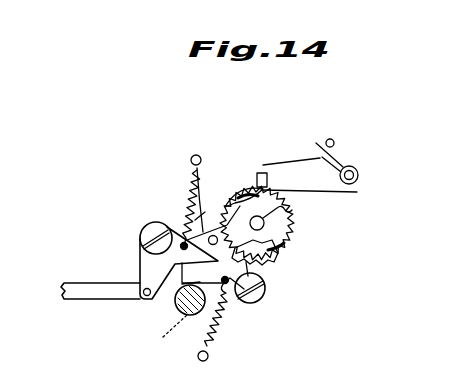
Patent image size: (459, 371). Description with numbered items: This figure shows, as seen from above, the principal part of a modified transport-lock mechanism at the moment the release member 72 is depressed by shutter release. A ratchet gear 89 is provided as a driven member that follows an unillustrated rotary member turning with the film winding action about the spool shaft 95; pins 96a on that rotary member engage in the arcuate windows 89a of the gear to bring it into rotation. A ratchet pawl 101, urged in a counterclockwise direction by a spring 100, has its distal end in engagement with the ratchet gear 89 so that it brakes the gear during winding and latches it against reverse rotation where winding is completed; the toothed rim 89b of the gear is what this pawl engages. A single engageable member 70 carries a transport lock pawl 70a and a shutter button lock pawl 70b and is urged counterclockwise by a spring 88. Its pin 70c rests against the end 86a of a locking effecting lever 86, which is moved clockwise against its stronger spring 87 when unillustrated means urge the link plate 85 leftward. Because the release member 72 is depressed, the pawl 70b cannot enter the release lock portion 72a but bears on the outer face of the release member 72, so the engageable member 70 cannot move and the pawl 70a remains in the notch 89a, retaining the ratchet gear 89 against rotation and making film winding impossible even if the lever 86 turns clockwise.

The engageable member 70 is at (233, 290).
The transport lock pawl 70a is at (215, 233).
The shutter button lock pawl 70b is at (183, 283).
The pin 70c is at (189, 202).
The release member 72 is at (193, 315).
The release lock portion 72a is at (157, 333).
The link plate 85 is at (77, 285).
The locking effecting lever 86 is at (140, 263).
The end of locking effecting lever 86a is at (184, 222).
The spring 87 is at (190, 167).
The spring 88 is at (220, 322).
The ratchet gear 89 is at (293, 221).
The notch 89a is at (271, 289).
The ratchet wheel portion 89b is at (247, 188).
The spool shaft 95 is at (292, 203).
The pins 96a is at (258, 183).
The spring 100 is at (347, 142).
The ratchet pawl 101 is at (330, 192).